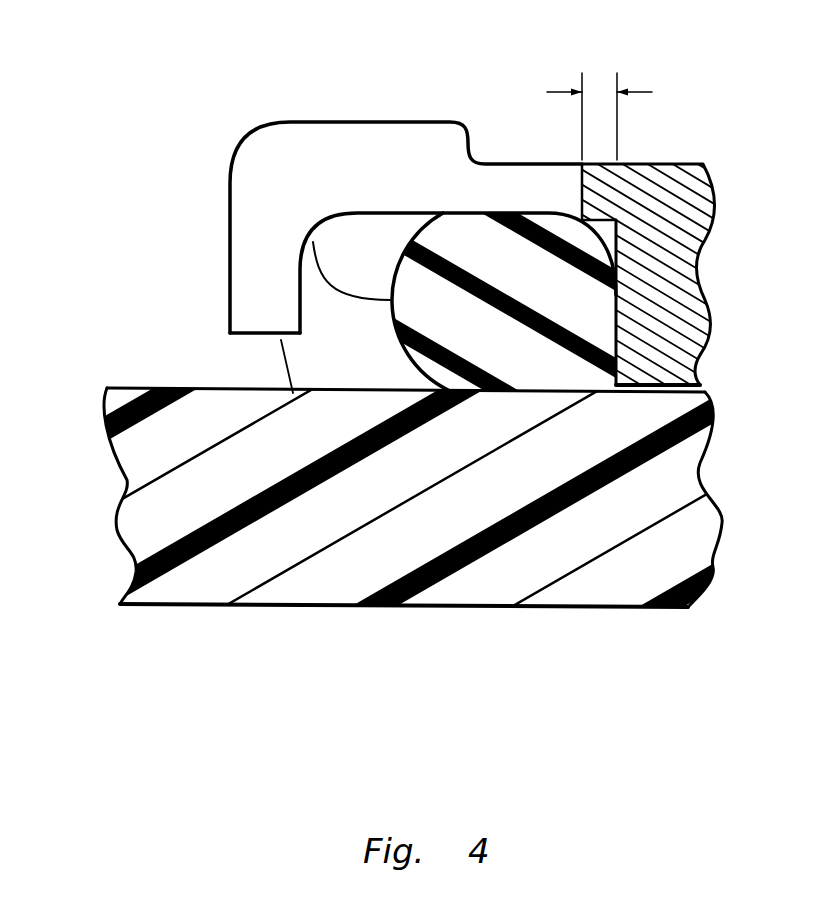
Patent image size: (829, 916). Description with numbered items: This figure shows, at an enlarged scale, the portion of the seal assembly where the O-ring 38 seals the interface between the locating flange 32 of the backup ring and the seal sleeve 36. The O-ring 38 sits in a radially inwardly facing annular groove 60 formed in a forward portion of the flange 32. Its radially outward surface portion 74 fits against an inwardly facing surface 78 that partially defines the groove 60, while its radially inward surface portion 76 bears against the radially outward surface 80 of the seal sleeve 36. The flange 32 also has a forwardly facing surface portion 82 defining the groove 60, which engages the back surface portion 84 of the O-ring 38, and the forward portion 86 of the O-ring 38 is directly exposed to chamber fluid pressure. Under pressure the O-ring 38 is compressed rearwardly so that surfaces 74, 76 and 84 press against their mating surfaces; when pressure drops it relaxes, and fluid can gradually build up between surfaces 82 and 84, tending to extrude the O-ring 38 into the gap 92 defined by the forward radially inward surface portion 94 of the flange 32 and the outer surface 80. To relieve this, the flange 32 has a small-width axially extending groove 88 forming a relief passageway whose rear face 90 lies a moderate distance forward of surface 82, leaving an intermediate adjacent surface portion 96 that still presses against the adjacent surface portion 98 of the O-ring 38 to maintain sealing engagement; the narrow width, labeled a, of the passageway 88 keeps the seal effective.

The locating flange 32 is at (670, 188).
The seal sleeve 36 is at (633, 578).
The O-ring 38 is at (578, 375).
The annular groove 60 is at (363, 363).
The radially outward surface portion 74 is at (475, 213).
The radially inward surface portion 76 is at (518, 385).
The inwardly facing surface 78 is at (462, 213).
The radially outward surface 80 is at (153, 389).
The forwardly facing surface portion 82 is at (619, 323).
The back surface portion 84 is at (614, 353).
The forward portion 86 is at (313, 242).
The axially extending groove 88 is at (362, 133).
The rear face 90 is at (572, 188).
The gap 92 is at (243, 366).
The forward radially inward surface portion 94 is at (293, 393).
The intermediate adjacent surface portion 96 is at (607, 229).
The adjacent surface portion 98 is at (612, 256).
The lip width a is at (590, 88).